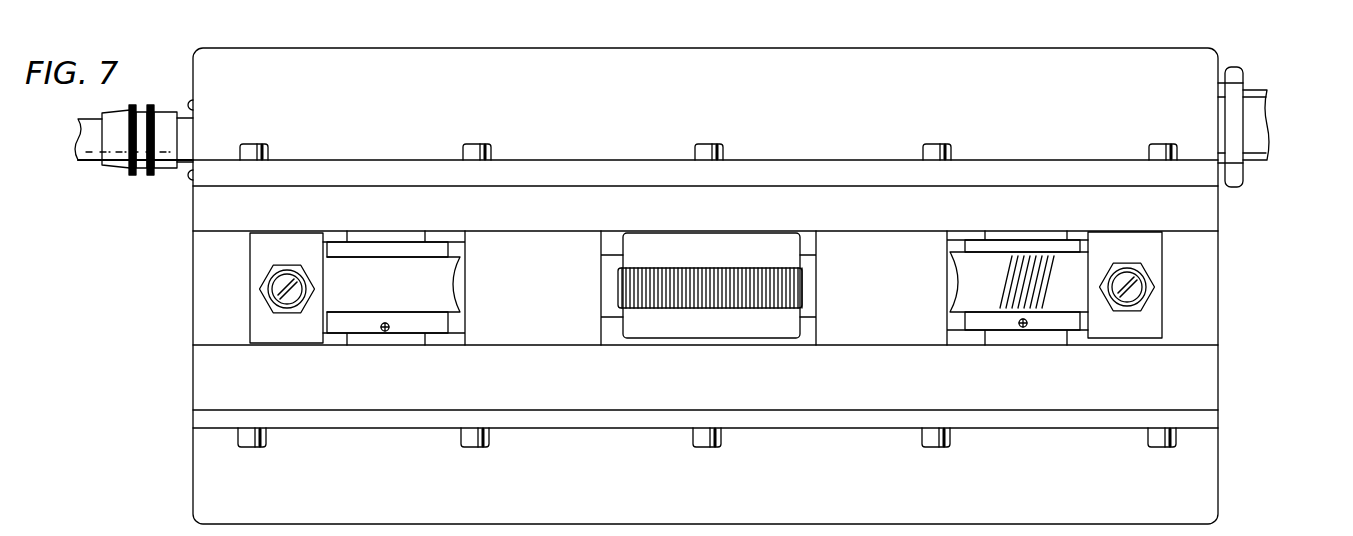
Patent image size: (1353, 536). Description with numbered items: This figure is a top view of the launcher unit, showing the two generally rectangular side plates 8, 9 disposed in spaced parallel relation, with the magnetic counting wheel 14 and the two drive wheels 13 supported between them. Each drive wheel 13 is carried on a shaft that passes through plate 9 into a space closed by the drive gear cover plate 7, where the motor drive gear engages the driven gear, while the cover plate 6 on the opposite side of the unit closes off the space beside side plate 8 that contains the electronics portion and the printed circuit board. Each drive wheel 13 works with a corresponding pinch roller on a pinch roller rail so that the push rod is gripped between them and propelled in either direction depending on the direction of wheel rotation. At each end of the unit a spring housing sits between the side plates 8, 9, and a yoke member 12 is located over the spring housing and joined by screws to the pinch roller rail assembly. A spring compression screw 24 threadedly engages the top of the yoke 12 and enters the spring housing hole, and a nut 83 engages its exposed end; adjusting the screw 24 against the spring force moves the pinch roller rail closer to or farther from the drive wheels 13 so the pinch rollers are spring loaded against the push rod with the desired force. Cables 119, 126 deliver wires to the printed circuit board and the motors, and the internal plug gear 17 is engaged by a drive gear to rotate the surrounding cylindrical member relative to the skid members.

The cover plate 6 is at (1027, 60).
The drive gear cover plate 7 is at (1203, 477).
The side plate 8 is at (207, 210).
The side plate 9 is at (205, 378).
The yoke member 12 is at (295, 242).
The drive wheel 13 is at (427, 281).
The magnetic counting wheel 14 is at (787, 288).
The internal plug gear 17 is at (90, 167).
The spring compression screw 24 is at (273, 280).
The nut 83 is at (268, 305).
The cable 119 is at (1258, 117).
The cable 126 is at (1252, 92).